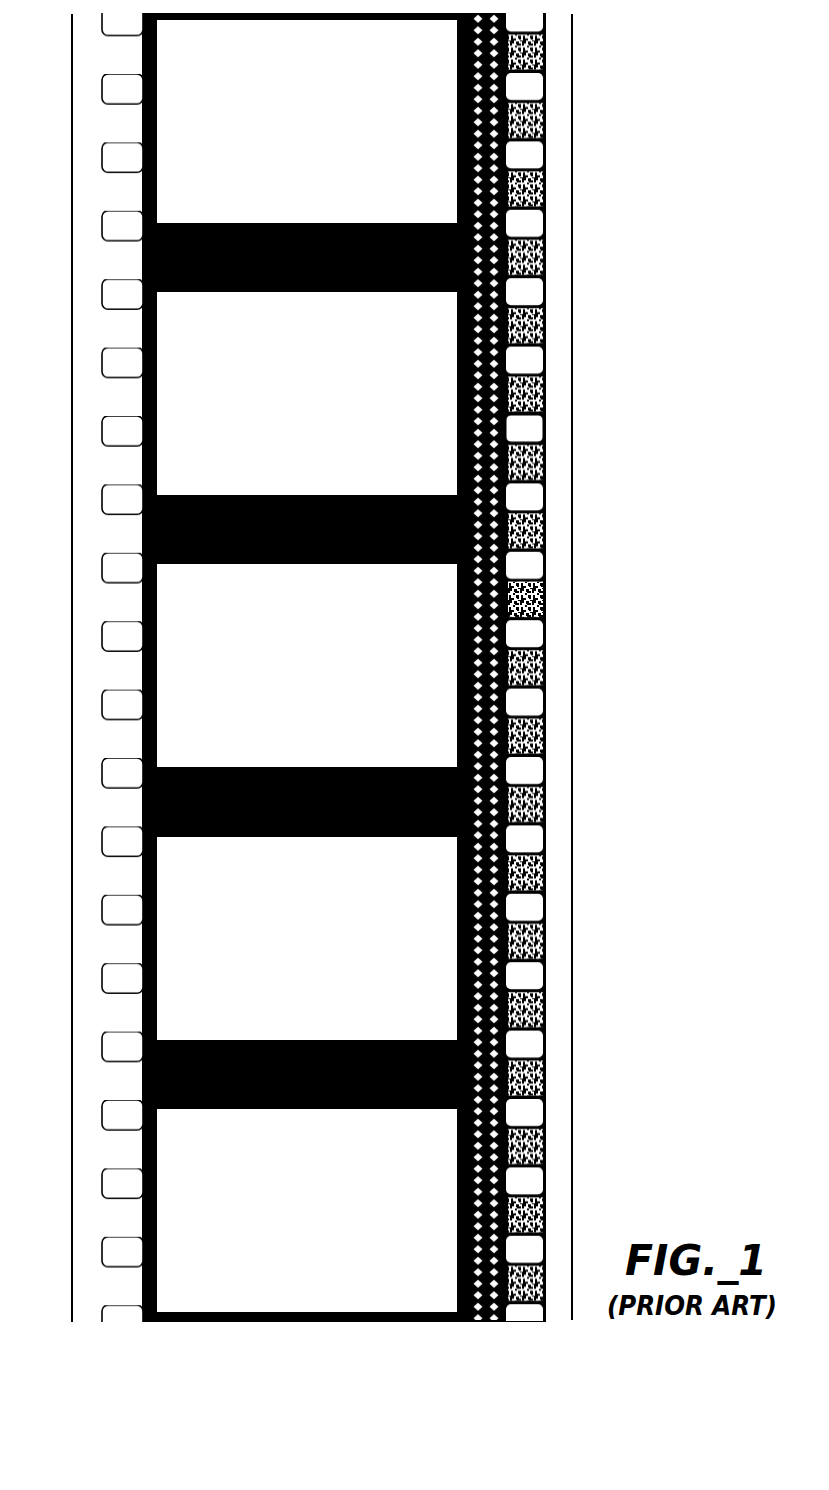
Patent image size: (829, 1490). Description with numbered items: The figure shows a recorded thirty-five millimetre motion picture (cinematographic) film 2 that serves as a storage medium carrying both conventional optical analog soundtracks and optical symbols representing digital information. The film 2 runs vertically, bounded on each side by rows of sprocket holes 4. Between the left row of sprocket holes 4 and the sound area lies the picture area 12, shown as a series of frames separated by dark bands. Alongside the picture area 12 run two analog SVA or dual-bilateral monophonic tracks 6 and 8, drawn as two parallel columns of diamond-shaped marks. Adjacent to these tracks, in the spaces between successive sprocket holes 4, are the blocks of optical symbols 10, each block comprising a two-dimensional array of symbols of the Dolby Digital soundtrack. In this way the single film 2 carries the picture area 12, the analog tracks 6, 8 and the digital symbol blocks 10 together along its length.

The motion picture film 2 is at (572, 78).
The sprocket holes 4 is at (537, 432).
The analog SVA or dual-bilateral monophonic track 6 is at (478, 1321).
The analog SVA or dual-bilateral monophonic track 8 is at (494, 1321).
The blocks of optical symbols 10 is at (545, 598).
The picture area 12 is at (172, 1223).